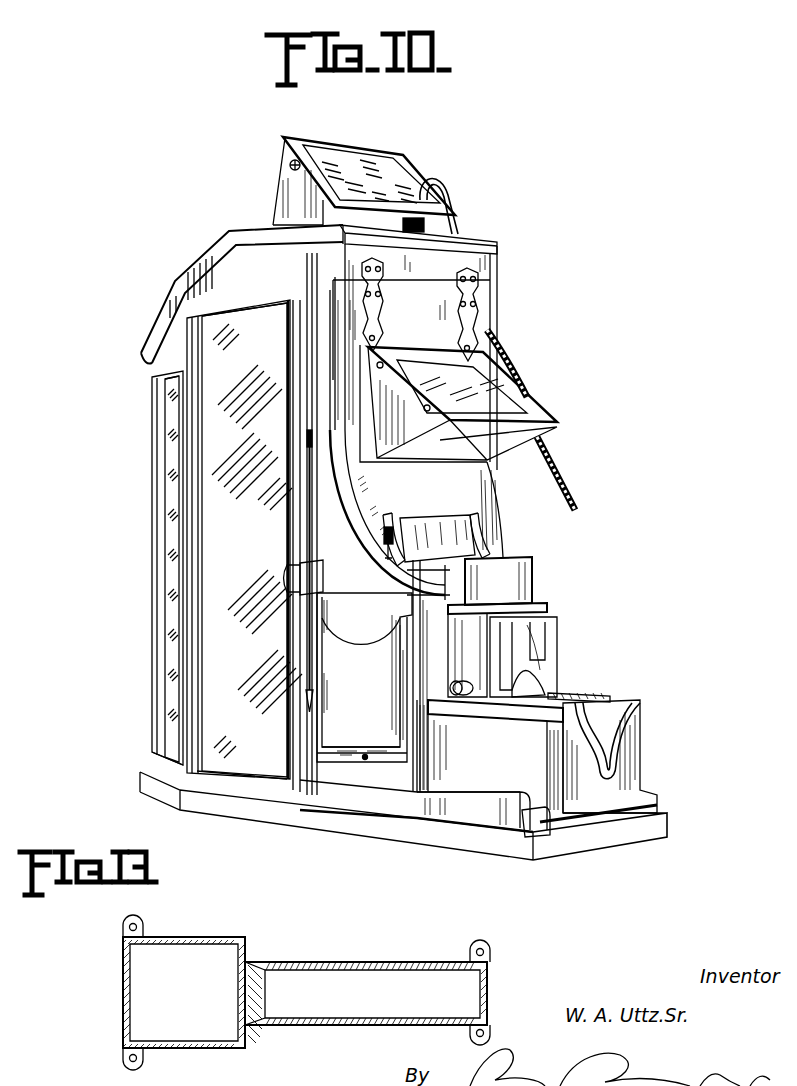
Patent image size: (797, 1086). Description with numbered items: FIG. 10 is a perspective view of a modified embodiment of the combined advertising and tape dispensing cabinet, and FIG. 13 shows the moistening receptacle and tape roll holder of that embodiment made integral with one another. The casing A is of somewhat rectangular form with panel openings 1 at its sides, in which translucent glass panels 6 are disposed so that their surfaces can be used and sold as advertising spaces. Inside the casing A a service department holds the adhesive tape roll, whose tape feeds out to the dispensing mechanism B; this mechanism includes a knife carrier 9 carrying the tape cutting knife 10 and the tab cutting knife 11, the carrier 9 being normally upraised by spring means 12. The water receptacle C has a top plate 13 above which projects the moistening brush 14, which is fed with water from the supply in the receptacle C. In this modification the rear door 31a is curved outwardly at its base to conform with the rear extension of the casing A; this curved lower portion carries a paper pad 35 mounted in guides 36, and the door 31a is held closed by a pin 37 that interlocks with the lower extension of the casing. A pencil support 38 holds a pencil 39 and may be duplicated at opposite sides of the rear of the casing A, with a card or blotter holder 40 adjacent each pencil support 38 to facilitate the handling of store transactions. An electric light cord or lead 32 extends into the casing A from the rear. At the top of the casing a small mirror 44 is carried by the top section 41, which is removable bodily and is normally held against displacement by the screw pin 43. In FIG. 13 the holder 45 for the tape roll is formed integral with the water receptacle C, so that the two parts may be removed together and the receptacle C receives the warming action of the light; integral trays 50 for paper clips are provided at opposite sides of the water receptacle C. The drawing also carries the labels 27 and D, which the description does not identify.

In FIG. 10, the panel openings 1 is at (167, 700).
In FIG. 10, the glass panels 6 is at (217, 330).
In FIG. 10, the knife carrier 9 is at (520, 573).
In FIG. 10, the tape cutting knife 10 is at (550, 612).
In FIG. 10, the tab cutting knife 11 is at (543, 647).
In FIG. 10, the spring means 12 is at (470, 700).
In FIG. 10, the top plate 13 is at (537, 710).
In FIG. 10, the moistening brush 14 is at (603, 695).
In FIG. 10, the hinged flap door 27 is at (543, 430).
In FIG. 10, the rear door 31a is at (488, 497).
In FIG. 10, the electric light cord 32 is at (527, 373).
In FIG. 10, the paper pad 35 is at (440, 533).
In FIG. 10, the guides 36 is at (397, 530).
In FIG. 10, the pin 37 is at (390, 543).
In FIG. 10, the pencil support 38 is at (317, 567).
In FIG. 10, the pencil 39 is at (309, 430).
In FIG. 10, the card or blotter holder 40 is at (333, 737).
In FIG. 10, the top section 41 is at (280, 230).
In FIG. 10, the screw pin 43 is at (427, 225).
In FIG. 10, the mirror 44 is at (393, 168).
In FIG. 13, the tape roll holder 45 is at (350, 967).
In FIG. 10, the trays 50 is at (472, 788).
In FIG. 10, the casing A is at (390, 777).
In FIG. 10, the dispensing mechanism B is at (572, 668).
In FIG. 10, the water receptacle C is at (630, 760).
In FIG. 13, the water receptacle C is at (142, 983).
In FIG. 10, the base D is at (477, 847).